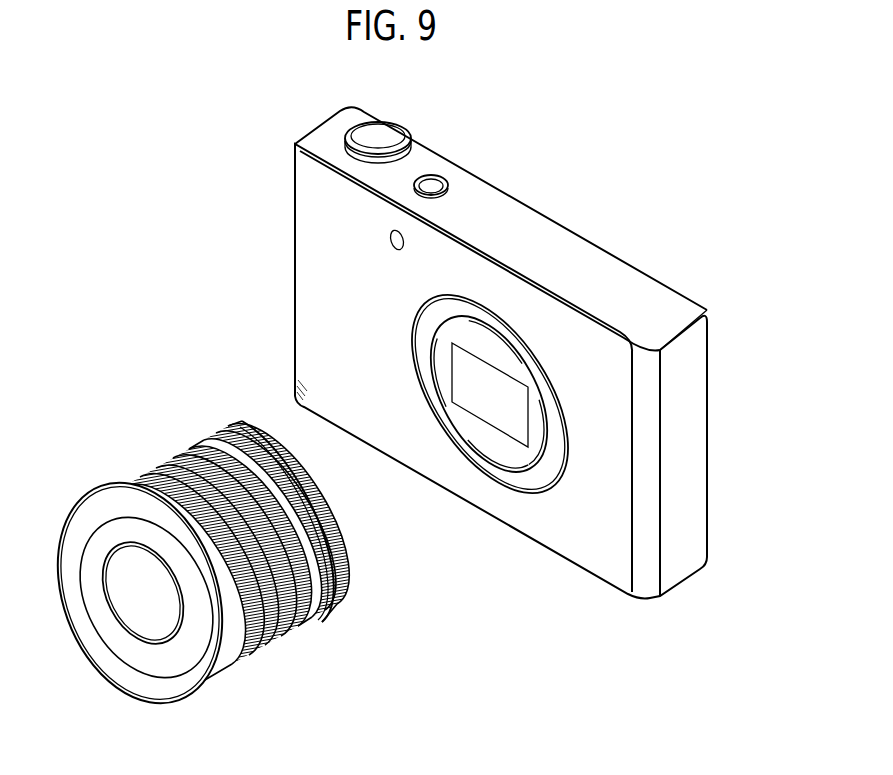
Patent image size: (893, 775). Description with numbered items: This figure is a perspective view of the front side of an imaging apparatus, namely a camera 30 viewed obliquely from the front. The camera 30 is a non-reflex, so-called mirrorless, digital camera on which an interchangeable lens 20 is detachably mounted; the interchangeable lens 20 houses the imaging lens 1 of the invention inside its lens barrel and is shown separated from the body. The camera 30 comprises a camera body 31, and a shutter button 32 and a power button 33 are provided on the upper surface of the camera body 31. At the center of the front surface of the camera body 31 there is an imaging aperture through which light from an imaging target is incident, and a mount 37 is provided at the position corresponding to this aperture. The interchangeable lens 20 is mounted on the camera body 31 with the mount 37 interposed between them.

The imaging lens 1 is at (147, 618).
The interchangeable lens 20 is at (189, 584).
The camera 30 is at (645, 187).
The camera body 31 is at (692, 407).
The shutter button 32 is at (388, 130).
The power button 33 is at (432, 186).
The mount 37 is at (516, 477).